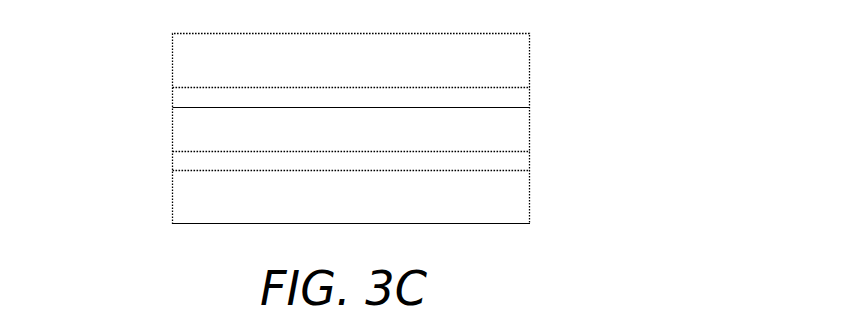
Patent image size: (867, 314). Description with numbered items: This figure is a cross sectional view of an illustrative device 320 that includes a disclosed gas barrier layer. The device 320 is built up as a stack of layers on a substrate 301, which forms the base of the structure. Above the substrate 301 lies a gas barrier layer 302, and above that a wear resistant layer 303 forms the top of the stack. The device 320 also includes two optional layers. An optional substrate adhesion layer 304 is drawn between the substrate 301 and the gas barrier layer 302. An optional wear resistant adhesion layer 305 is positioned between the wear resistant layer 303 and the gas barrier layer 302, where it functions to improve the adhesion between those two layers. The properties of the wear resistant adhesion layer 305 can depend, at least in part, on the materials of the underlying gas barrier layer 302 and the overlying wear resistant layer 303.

The device 320 is at (118, 120).
The substrate 301 is at (336, 216).
The gas barrier layer 302 is at (261, 134).
The wear resistant layer 303 is at (270, 70).
The substrate adhesion layer 304 is at (450, 172).
The wear resistant adhesion layer 305 is at (438, 108).